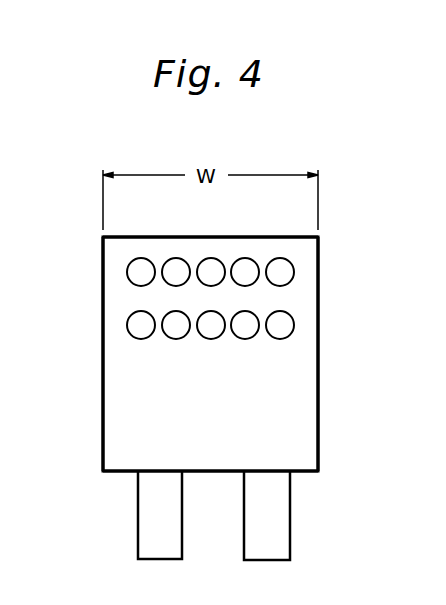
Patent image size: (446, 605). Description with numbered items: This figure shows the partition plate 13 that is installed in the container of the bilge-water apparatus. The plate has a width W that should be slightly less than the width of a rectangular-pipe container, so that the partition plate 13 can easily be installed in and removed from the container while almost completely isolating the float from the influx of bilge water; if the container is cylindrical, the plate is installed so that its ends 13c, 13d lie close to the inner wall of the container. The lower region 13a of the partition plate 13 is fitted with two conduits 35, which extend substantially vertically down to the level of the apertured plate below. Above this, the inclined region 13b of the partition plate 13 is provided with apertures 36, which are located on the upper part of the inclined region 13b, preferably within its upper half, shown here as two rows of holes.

The partition plate 13 is at (330, 334).
The region of the partition plate 13a is at (307, 472).
The inclined region of the partition plate 13b is at (263, 393).
The end of the partition plate 13c is at (103, 327).
The end of the partition plate 13d is at (318, 288).
The conduits 35 is at (290, 543).
The apertures 36 is at (282, 258).